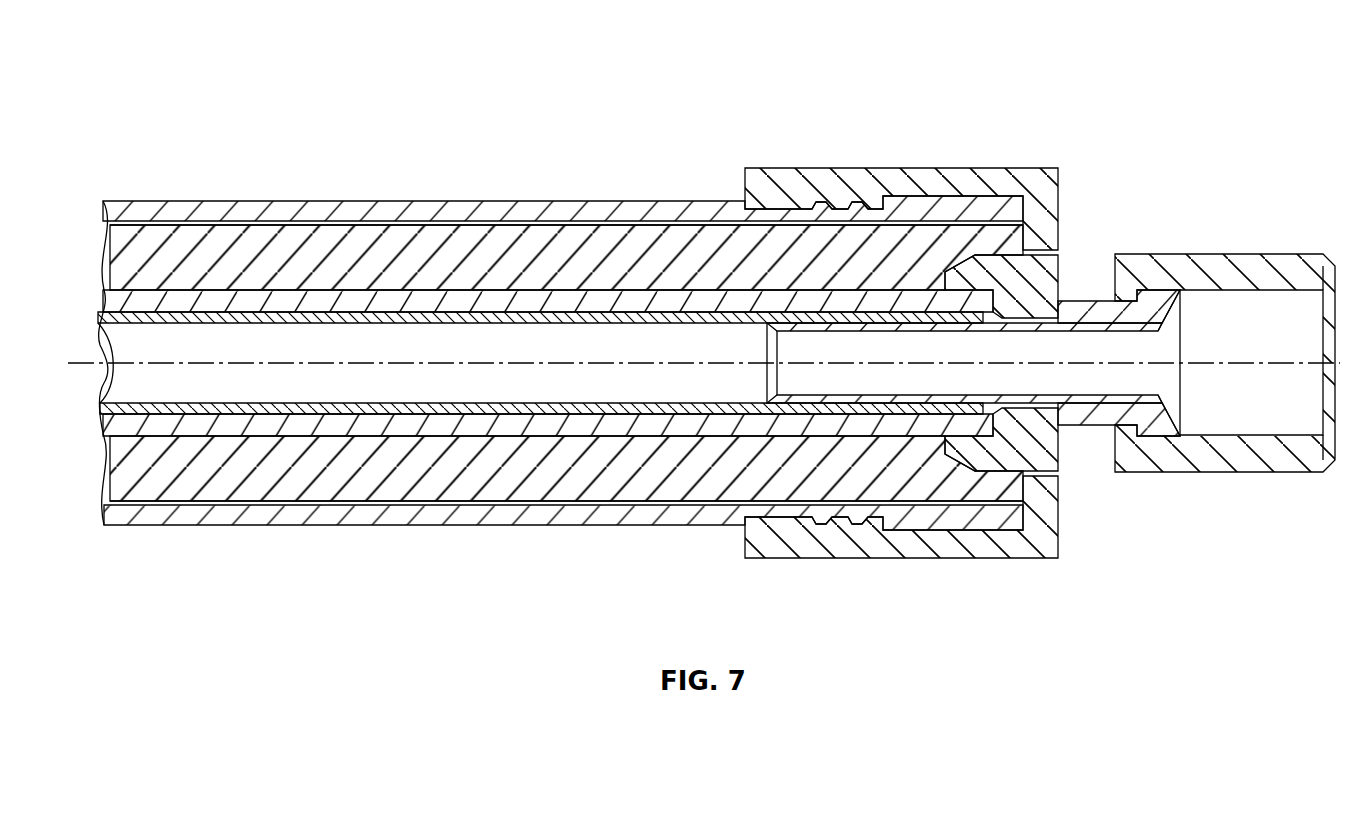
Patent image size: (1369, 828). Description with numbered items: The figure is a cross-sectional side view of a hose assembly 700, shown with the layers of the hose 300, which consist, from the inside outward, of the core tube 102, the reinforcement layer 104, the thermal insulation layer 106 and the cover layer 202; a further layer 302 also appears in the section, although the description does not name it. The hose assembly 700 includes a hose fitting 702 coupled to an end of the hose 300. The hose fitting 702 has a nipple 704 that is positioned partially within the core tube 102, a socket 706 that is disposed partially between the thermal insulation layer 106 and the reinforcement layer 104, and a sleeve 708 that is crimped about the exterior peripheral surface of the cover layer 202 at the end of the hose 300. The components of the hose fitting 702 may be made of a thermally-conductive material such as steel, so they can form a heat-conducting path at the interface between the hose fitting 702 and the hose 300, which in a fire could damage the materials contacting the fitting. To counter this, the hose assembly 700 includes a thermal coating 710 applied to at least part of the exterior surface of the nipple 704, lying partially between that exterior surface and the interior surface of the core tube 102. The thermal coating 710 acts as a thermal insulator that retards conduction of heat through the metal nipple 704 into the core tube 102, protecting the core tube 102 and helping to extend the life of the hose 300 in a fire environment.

The hose 300 is at (127, 176).
The core tube 102 is at (135, 312).
The reinforcement layer 104 is at (232, 300).
The thermal insulation layer 106 is at (340, 255).
The bonding layer 302 is at (470, 222).
The cover layer 202 is at (617, 213).
The hose assembly 700 is at (1127, 133).
The hose fitting 702 is at (1253, 253).
The nipple 704 is at (1078, 413).
The socket 706 is at (1045, 275).
The sleeve 708 is at (958, 180).
The thermal coating 710 is at (1076, 301).